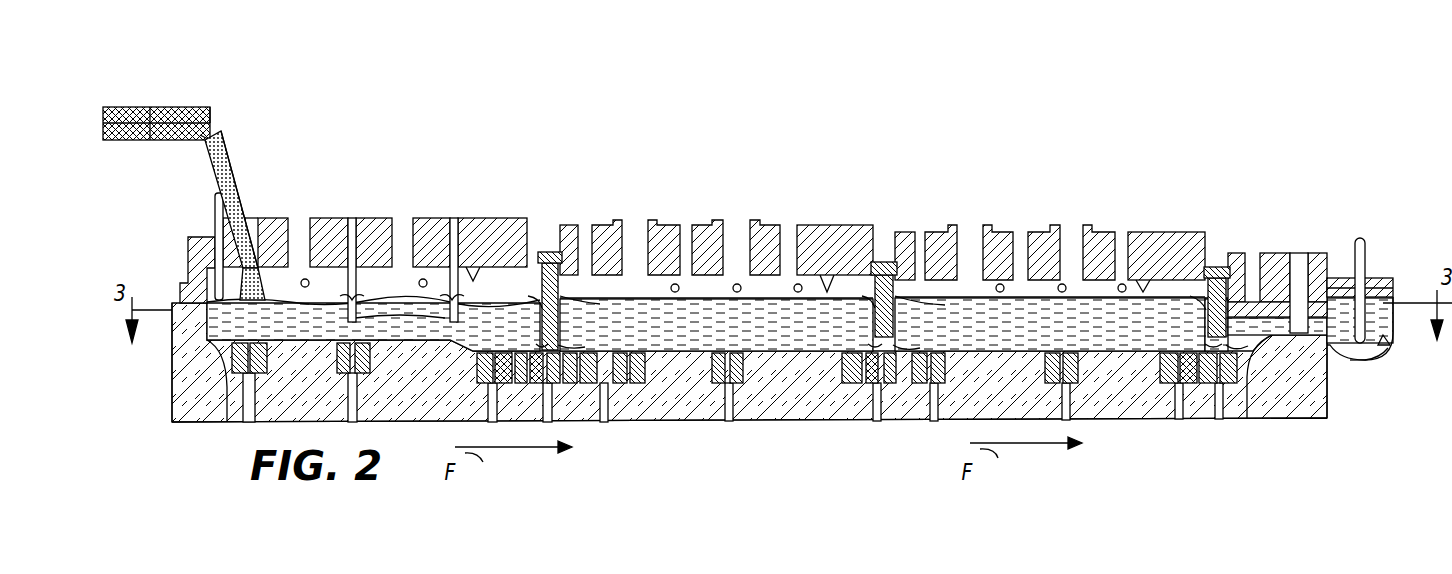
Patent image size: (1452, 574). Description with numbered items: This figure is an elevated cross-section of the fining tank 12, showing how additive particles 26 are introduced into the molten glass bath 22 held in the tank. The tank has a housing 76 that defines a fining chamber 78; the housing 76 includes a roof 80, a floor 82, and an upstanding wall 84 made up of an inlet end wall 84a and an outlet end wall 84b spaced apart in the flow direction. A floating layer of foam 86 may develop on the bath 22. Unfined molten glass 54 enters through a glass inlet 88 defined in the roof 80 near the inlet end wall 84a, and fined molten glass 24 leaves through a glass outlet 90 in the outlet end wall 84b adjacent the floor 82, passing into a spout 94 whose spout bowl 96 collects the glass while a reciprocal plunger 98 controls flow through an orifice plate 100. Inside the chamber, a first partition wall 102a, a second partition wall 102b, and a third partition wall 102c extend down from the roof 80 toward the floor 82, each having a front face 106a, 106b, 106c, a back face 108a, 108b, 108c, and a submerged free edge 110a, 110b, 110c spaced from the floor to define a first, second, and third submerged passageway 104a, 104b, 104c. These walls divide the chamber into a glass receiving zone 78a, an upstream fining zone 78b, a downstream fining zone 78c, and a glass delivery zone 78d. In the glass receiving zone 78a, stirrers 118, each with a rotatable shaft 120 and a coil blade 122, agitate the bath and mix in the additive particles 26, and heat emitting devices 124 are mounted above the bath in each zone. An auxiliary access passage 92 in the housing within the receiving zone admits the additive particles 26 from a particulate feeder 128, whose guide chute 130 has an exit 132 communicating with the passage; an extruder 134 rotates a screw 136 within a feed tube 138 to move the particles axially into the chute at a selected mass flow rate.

The fining tank 12 is at (772, 178).
The molten glass bath 22 is at (800, 323).
The fined molten glass 24 is at (1320, 330).
The additive particles 26 is at (250, 282).
The unfined molten glass 54 is at (213, 206).
The housing 76 is at (165, 420).
The fining chamber 78 is at (226, 388).
The glass receiving zone 78a is at (475, 265).
The upstream fining zone 78b is at (831, 284).
The downstream fining zone 78c is at (1146, 285).
The glass delivery zone 78d is at (1282, 300).
The roof 80 is at (806, 230).
The floor 82 is at (796, 415).
The upstanding wall 84 is at (165, 385).
The inlet end wall 84a is at (183, 356).
The outlet end wall 84b is at (1305, 278).
The floating layer of foam 86 is at (546, 251).
The glass inlet 88 is at (213, 245).
The glass outlet 90 is at (1333, 348).
The auxiliary access passage 92 is at (250, 215).
The spout 94 is at (1376, 360).
The spout bowl 96 is at (1386, 341).
The reciprocal plunger 98 is at (1367, 258).
The orifice plate 100 is at (1360, 363).
The first partition wall 102a is at (551, 262).
The second partition wall 102b is at (886, 262).
The third partition wall 102c is at (1218, 268).
The first submerged passageway 104a is at (560, 349).
The second submerged passageway 104b is at (897, 348).
The third submerged passageway 104c is at (1210, 348).
The front face of first partition wall 106a is at (541, 306).
The front face of second partition wall 106b is at (874, 306).
The front face of third partition wall 106c is at (1205, 296).
The back face of first partition wall 108a is at (560, 300).
The back face of second partition wall 108b is at (900, 298).
The back face of third partition wall 108c is at (1246, 382).
The free edge of first partition wall 110a is at (542, 347).
The free edge of second partition wall 110b is at (873, 346).
The free edge of third partition wall 110c is at (1213, 342).
The stirrer 118 is at (450, 235).
The rotatable shaft 120 is at (360, 295).
The coil blade 122 is at (470, 315).
The heat emitting device 124 is at (308, 278).
The particulate feeder 128 is at (152, 86).
The guide chute 130 is at (233, 141).
The exit 132 is at (250, 206).
The extruder 134 is at (177, 110).
The screw 136 is at (200, 138).
The feed tube 138 is at (212, 117).